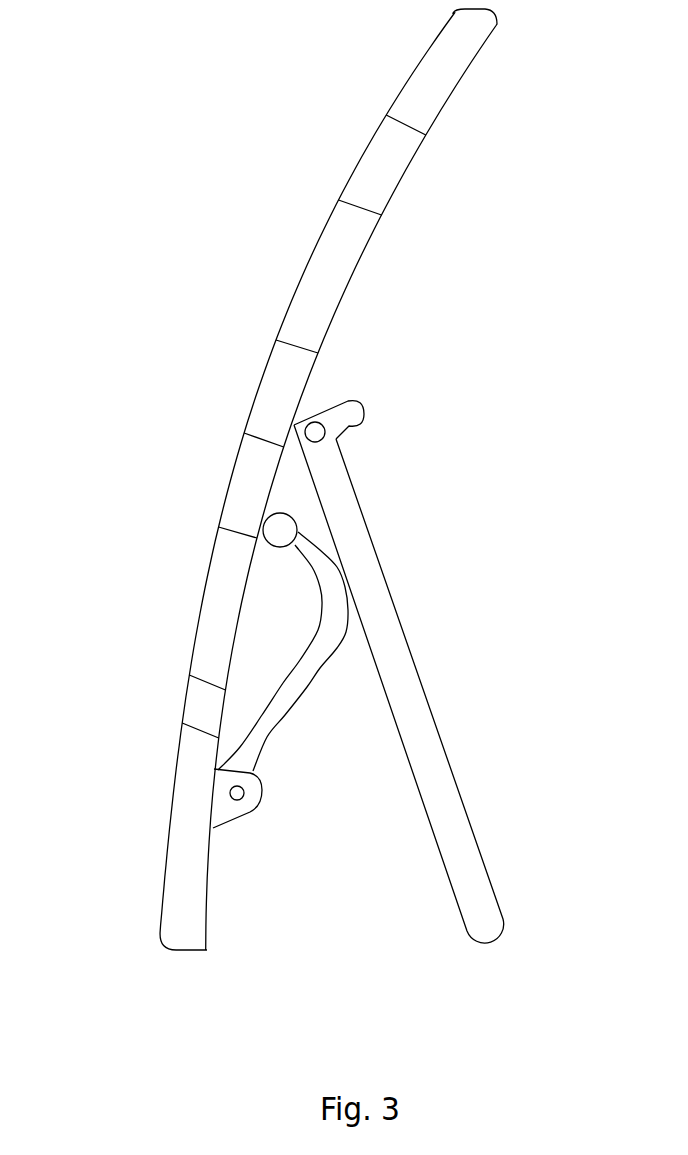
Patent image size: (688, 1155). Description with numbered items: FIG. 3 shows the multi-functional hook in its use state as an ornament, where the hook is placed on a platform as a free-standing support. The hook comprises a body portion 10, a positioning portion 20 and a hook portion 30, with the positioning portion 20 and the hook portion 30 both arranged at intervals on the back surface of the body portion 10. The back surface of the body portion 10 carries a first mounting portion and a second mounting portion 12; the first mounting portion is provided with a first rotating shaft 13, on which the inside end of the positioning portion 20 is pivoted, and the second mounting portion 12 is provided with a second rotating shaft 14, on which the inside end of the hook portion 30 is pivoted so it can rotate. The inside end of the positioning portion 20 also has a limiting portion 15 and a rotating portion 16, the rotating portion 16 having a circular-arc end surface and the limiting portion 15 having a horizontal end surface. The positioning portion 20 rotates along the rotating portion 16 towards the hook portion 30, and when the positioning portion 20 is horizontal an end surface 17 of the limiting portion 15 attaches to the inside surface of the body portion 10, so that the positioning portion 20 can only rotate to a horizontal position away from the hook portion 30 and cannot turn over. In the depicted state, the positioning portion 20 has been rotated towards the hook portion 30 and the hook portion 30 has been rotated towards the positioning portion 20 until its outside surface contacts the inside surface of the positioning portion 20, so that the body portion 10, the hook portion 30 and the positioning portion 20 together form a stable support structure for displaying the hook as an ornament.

The body portion 10 is at (213, 606).
The second mounting portion 12 is at (212, 800).
The first rotating shaft 13 is at (325, 433).
The second rotating shaft 14 is at (240, 813).
The limiting portion 15 is at (348, 402).
The rotating portion 16 is at (293, 431).
The end surface 17 is at (337, 403).
The positioning portion 20 is at (445, 793).
The hook portion 30 is at (320, 658).